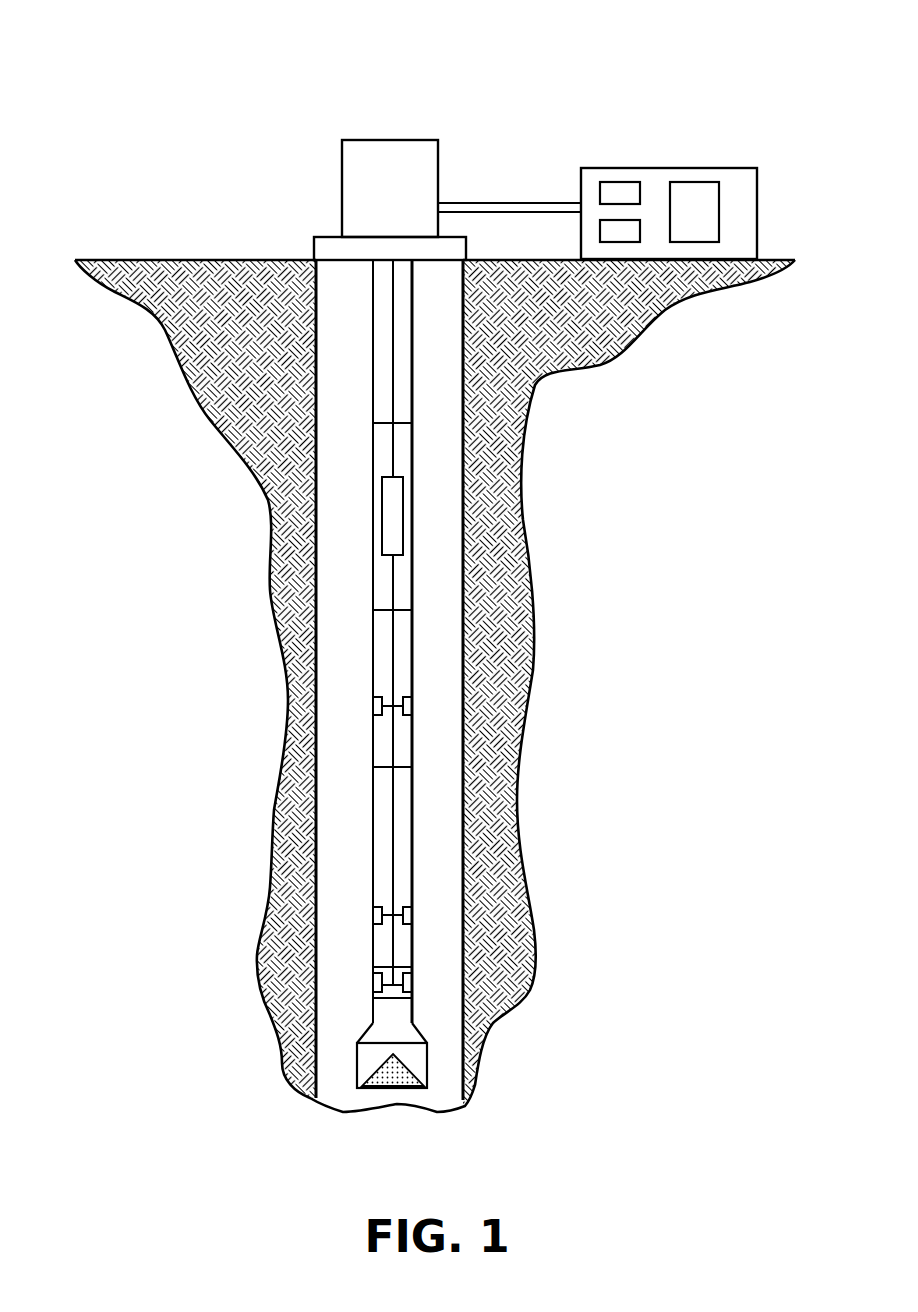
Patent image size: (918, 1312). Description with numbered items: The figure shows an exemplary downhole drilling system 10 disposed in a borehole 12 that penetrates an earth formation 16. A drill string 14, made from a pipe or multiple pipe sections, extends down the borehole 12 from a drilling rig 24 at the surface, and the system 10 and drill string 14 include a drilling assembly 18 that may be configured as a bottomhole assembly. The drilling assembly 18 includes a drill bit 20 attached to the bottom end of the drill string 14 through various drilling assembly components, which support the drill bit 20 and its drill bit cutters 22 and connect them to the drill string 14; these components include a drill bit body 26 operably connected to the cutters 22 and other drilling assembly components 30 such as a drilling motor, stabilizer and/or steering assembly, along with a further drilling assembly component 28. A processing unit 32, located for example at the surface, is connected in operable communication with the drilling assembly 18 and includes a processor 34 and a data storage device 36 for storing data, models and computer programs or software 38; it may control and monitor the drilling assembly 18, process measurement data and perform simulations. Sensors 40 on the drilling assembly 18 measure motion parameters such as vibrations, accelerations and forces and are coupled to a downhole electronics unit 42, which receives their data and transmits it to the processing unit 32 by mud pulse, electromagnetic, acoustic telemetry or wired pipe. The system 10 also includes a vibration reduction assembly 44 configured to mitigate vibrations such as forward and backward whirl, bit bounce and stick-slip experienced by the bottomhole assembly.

The downhole drilling system 10 is at (120, 98).
The borehole 12 is at (447, 582).
The drill string 14 is at (412, 500).
The earth formation 16 is at (230, 378).
The drilling assembly 18 is at (173, 715).
The drill bit 20 is at (344, 1066).
The drill bit cutters 22 is at (393, 1090).
The drilling rig 24 is at (388, 140).
The drill bit body 26 is at (408, 1030).
The drill collar 28 is at (402, 745).
The drilling assembly components 30 is at (402, 945).
The processing unit 32 is at (727, 168).
The processor 34 is at (617, 192).
The data storage device 36 is at (611, 224).
The computer programs or software 38 is at (690, 188).
The sensors 40 is at (373, 712).
The downhole electronics unit 42 is at (373, 517).
The vibration reduction assembly 44 is at (415, 815).